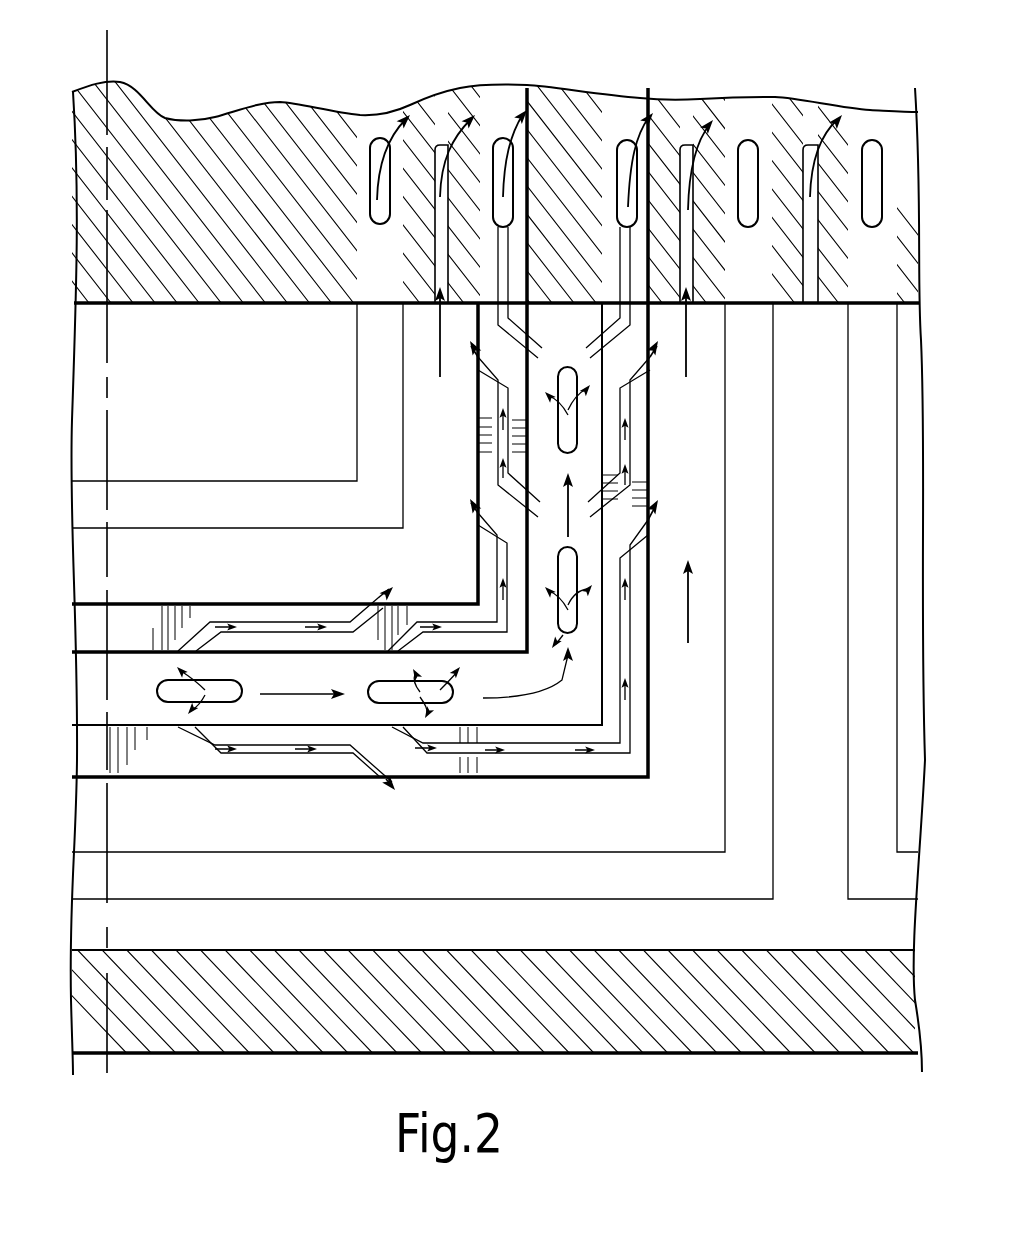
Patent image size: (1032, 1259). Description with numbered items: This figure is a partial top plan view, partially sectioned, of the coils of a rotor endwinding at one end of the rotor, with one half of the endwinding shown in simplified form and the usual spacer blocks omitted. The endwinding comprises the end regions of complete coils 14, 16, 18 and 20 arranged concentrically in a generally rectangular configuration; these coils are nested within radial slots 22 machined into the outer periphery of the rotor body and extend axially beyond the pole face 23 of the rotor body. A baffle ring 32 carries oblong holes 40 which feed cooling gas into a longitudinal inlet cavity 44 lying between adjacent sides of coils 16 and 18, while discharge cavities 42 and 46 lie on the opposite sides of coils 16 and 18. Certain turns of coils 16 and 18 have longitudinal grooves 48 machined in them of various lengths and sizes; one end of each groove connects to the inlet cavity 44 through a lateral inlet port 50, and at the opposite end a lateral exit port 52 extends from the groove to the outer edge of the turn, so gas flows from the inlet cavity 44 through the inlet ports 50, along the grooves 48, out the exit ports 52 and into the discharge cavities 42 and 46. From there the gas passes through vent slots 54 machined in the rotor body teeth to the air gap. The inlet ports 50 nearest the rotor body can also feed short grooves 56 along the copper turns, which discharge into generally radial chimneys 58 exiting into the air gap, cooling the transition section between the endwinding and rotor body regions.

The coil 14 is at (284, 470).
The coil 16 is at (254, 596).
The coil 18 is at (282, 785).
The coil 20 is at (297, 840).
The radial slot 22 is at (482, 116).
The pole face 23 is at (178, 305).
The baffle ring 32 is at (669, 823).
The oblong hole 40 is at (227, 687).
The discharge cavity 42 is at (432, 422).
The longitudinal inlet cavity 44 is at (543, 775).
The discharge cavity 46 is at (697, 443).
The longitudinal groove 48 is at (500, 453).
The lateral inlet port 50 is at (512, 330).
The lateral exit port 52 is at (498, 372).
The vent slot 54 is at (443, 272).
The short groove 56 is at (503, 257).
The radial chimney 58 is at (503, 200).